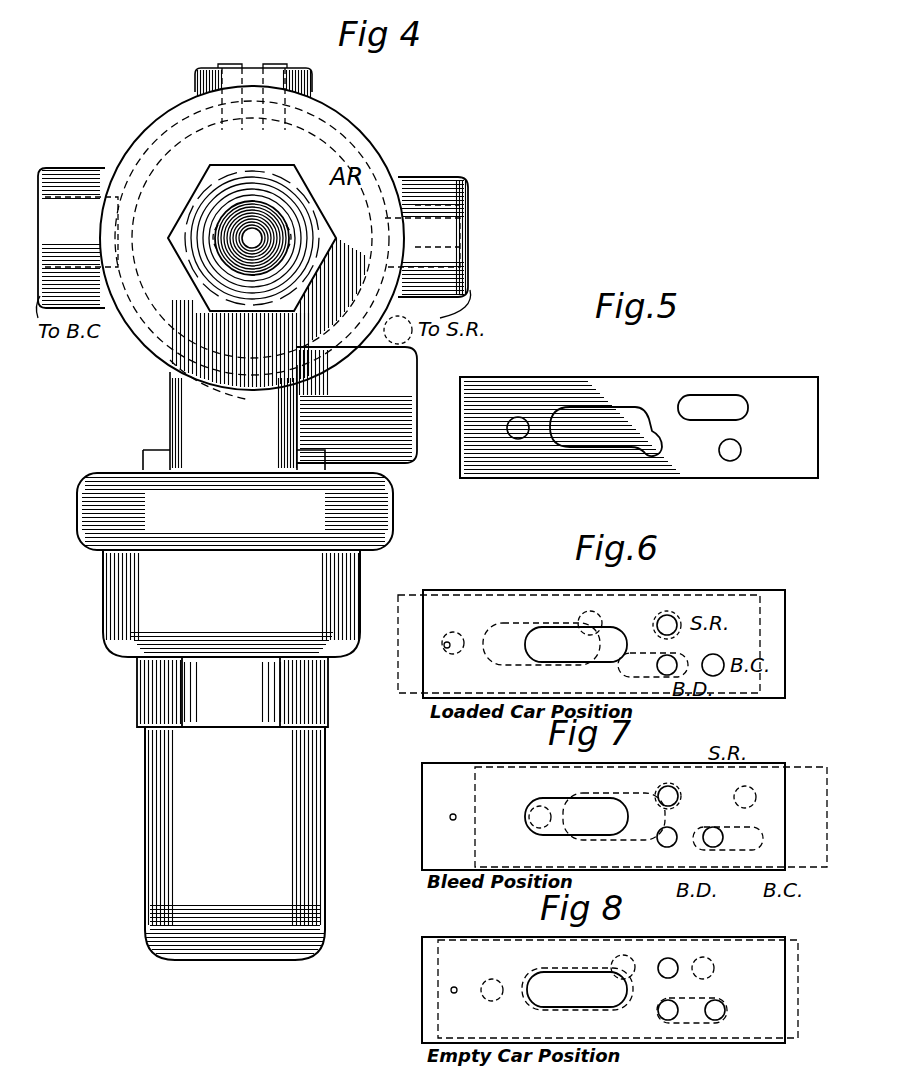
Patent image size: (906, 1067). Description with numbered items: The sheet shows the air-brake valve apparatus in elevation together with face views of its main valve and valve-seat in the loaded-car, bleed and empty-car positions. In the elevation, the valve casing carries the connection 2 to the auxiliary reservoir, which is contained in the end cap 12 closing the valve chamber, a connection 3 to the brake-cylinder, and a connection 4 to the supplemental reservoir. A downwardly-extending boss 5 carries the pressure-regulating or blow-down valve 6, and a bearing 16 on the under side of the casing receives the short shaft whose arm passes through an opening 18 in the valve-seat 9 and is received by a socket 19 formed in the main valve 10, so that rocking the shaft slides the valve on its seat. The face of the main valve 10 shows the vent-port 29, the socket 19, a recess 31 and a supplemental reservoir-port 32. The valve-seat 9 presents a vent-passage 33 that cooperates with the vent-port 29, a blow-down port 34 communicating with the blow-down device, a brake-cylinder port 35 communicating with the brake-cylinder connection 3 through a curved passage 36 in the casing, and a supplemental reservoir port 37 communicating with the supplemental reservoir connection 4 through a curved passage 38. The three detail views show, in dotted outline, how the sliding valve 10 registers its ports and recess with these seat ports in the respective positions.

In FIG. 4, the connection 2 is at (335, 185).
In FIG. 4, the connection 3 is at (86, 242).
In FIG. 4, the connection 4 is at (452, 254).
In FIG. 4, the boss or projection 5 is at (170, 415).
In FIG. 4, the pressure-regulating valve 6 is at (232, 808).
In FIG. 6, the valve-seat 9 is at (780, 596).
In FIG. 7, the valve-seat 9 is at (425, 772).
In FIG. 8, the valve-seat 9 is at (425, 1020).
In FIG. 5, the main valve 10 is at (639, 427).
In FIG. 4, the end cap 12 is at (345, 126).
In FIG. 4, the bearing 16 is at (357, 405).
In FIG. 6, the opening 18 is at (576, 644).
In FIG. 5, the socket 19 is at (606, 431).
In FIG. 5, the vent-port 29 is at (522, 418).
In FIG. 6, the vent-port 29 is at (448, 652).
In FIG. 7, the vent-port 29 is at (540, 806).
In FIG. 8, the vent-port 29 is at (494, 980).
In FIG. 5, the recess 31 is at (705, 398).
In FIG. 7, the recess 31 is at (763, 838).
In FIG. 8, the recess 31 is at (727, 1000).
In FIG. 5, the supplemental reservoir-port 32 is at (728, 462).
In FIG. 7, the supplemental reservoir-port 32 is at (757, 795).
In FIG. 8, the supplemental reservoir-port 32 is at (715, 965).
In FIG. 6, the vent-passage 33 is at (444, 646).
In FIG. 7, the vent-passage 33 is at (453, 814).
In FIG. 8, the vent-passage 33 is at (454, 986).
In FIG. 6, the port 34 is at (667, 676).
In FIG. 7, the port 34 is at (667, 847).
In FIG. 8, the port 34 is at (658, 1012).
In FIG. 6, the port 35 is at (715, 677).
In FIG. 7, the port 35 is at (717, 843).
In FIG. 8, the port 35 is at (728, 1014).
In FIG. 4, the curved passage 36 is at (160, 345).
In FIG. 6, the port 37 is at (672, 614).
In FIG. 7, the port 37 is at (669, 788).
In FIG. 8, the port 37 is at (668, 958).
In FIG. 4, the curved passage 38 is at (348, 322).